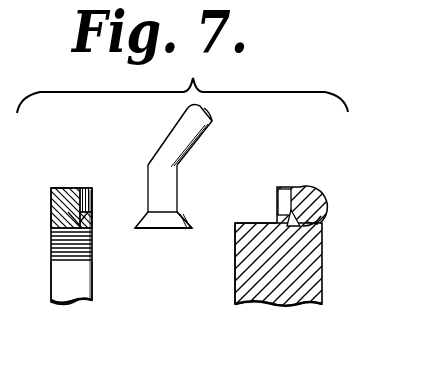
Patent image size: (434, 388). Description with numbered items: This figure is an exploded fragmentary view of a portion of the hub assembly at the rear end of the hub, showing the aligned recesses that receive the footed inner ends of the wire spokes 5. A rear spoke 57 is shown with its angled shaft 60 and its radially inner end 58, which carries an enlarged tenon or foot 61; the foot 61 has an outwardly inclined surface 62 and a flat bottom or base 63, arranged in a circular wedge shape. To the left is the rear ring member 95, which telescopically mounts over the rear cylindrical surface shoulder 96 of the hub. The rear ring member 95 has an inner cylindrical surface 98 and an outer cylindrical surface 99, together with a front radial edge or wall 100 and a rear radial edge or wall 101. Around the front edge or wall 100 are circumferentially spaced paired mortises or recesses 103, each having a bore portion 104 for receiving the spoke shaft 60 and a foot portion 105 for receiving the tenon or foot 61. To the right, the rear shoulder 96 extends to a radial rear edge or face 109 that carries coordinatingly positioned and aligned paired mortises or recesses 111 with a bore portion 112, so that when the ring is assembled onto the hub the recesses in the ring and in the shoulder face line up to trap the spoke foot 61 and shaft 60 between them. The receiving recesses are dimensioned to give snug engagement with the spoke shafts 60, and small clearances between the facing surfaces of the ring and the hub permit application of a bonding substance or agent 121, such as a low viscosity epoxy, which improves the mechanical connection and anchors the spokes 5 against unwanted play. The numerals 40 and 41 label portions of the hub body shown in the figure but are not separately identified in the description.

The wire spoke 5 is at (170, 132).
The housing block 40 is at (318, 280).
The housing bottom portion 41 is at (239, 296).
The rear spoke 57 is at (214, 121).
The radially inner end 58 is at (170, 198).
The angled shaft 60 is at (148, 172).
The tenon or foot 61 is at (167, 228).
The outwardly inclined surface 62 is at (188, 218).
The flat bottom or base 63 is at (150, 230).
The rear ring member 95 is at (62, 190).
The rear cylindrical surface shoulder 96 is at (236, 226).
The inner cylindrical surface 98 is at (52, 258).
The outer cylindrical surface 99 is at (66, 189).
The front radial edge or wall 100 is at (93, 292).
The rear radial edge or wall 101 is at (51, 295).
The mortise or recess 103 is at (93, 172).
The bore portion 104 is at (97, 199).
The foot portion 105 is at (92, 240).
The radial rear edge or face 109 is at (275, 192).
The mortise or recess 111 is at (292, 188).
The bore portion 112 is at (318, 230).
The bonding substance or agent 121 is at (251, 222).